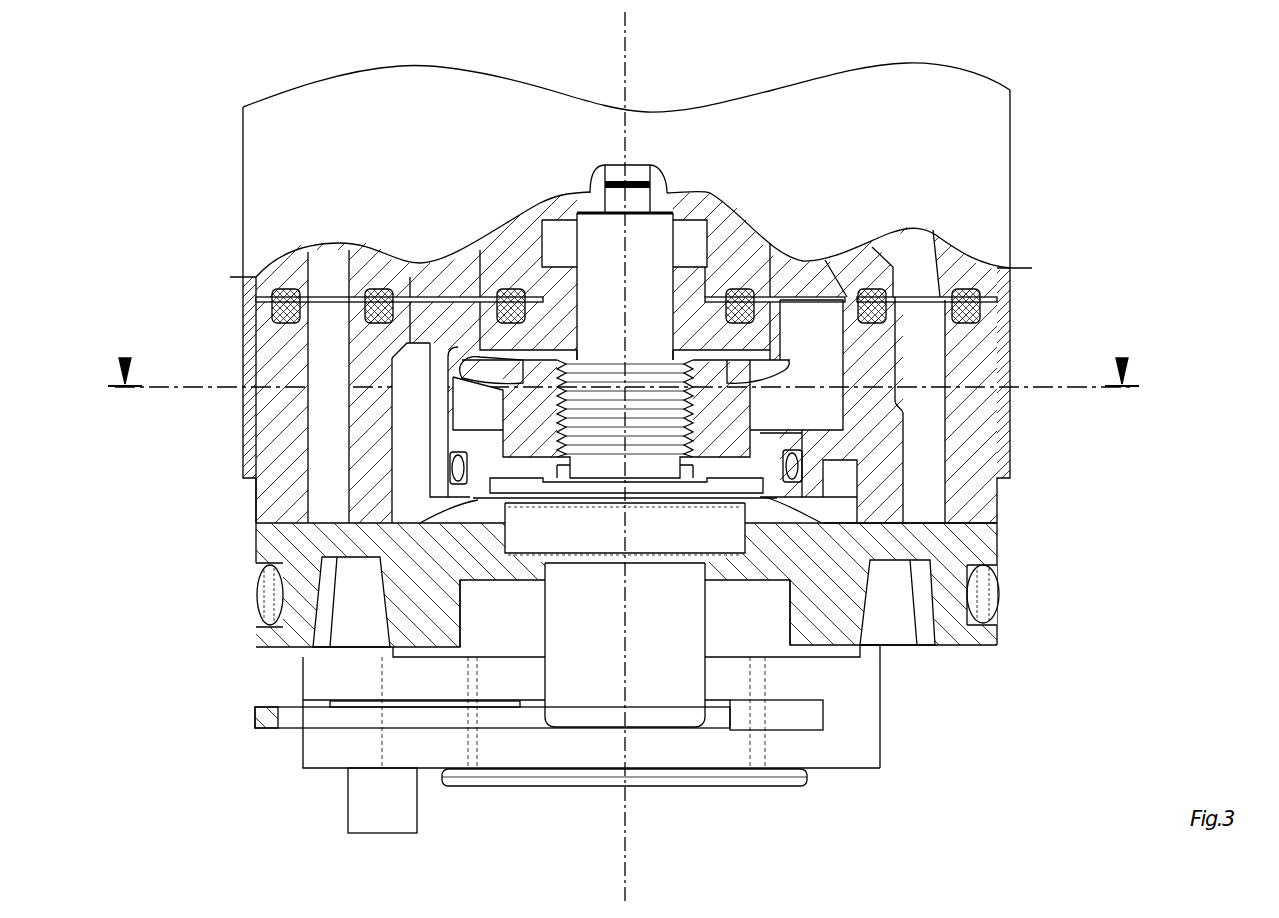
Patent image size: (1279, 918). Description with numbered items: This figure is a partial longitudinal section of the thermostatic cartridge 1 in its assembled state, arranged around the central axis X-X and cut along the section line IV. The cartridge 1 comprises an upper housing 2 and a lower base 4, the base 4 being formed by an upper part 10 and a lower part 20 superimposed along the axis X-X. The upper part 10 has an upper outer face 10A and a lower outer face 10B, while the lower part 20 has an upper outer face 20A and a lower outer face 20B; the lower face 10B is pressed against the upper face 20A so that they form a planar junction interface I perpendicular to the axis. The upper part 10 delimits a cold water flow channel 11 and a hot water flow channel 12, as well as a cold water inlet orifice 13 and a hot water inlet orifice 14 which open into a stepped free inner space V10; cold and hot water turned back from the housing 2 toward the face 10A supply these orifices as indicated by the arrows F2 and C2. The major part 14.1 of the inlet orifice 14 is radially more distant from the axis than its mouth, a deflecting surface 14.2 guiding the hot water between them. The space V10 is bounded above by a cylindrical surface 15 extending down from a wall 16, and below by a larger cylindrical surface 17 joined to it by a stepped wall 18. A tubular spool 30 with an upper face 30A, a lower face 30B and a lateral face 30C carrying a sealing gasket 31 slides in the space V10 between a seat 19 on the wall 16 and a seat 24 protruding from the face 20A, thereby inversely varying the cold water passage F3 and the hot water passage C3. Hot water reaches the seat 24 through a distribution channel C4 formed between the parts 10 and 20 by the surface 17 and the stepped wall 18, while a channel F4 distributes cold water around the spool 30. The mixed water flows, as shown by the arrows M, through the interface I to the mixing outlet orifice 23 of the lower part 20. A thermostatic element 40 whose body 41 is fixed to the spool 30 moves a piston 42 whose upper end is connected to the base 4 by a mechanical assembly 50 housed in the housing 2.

The thermostatic cartridge 1 is at (205, 118).
The upper housing 2 is at (243, 162).
The lower base 4 is at (84, 585).
The upper part 10 is at (253, 517).
The upper outer face 10A is at (957, 280).
The lower outer face 10B is at (1000, 590).
The cold water flow channel 11 is at (920, 410).
The hot water flow channel 12 is at (328, 386).
The cold water inlet orifice 13 is at (815, 334).
The hot water inlet orifice 14 is at (431, 433).
The major part of the hot water inlet orifice 14.1 is at (417, 432).
The deflecting surface 14.2 is at (468, 355).
The cylindrical surface 15 is at (457, 402).
The wall 16 is at (727, 292).
The cylindrical surface 17 is at (805, 520).
The stepped wall 18 is at (838, 488).
The seat 19 is at (472, 348).
The lower part 20 is at (253, 550).
The upper outer face 20A is at (257, 565).
The lower outer face 20B is at (263, 650).
The mixing outlet orifice 23 is at (625, 615).
The seat 24 is at (430, 480).
The spool 30 is at (497, 418).
The upper outer face 30A is at (757, 352).
The lower outer face 30B is at (490, 495).
The lateral outer face 30C is at (808, 440).
The sealing gasket 31 is at (857, 490).
The thermostatic element 40 is at (581, 199).
The body 41 is at (567, 665).
The piston 42 is at (637, 200).
The mechanical assembly 50 is at (273, 265).
The free inner space V10 is at (703, 343).
The cold water arrow F2 is at (805, 285).
The cold water passage F3 is at (788, 365).
The cold water distribution channel F4 is at (796, 365).
The hot water arrow C2 is at (463, 275).
The hot water passage C3 is at (822, 518).
The hot water distribution channel C4 is at (440, 513).
The mixed water arrows M is at (500, 503).
The junction interface I is at (1005, 527).
The section line IV is at (627, 360).
The central axis X-X is at (637, 456).